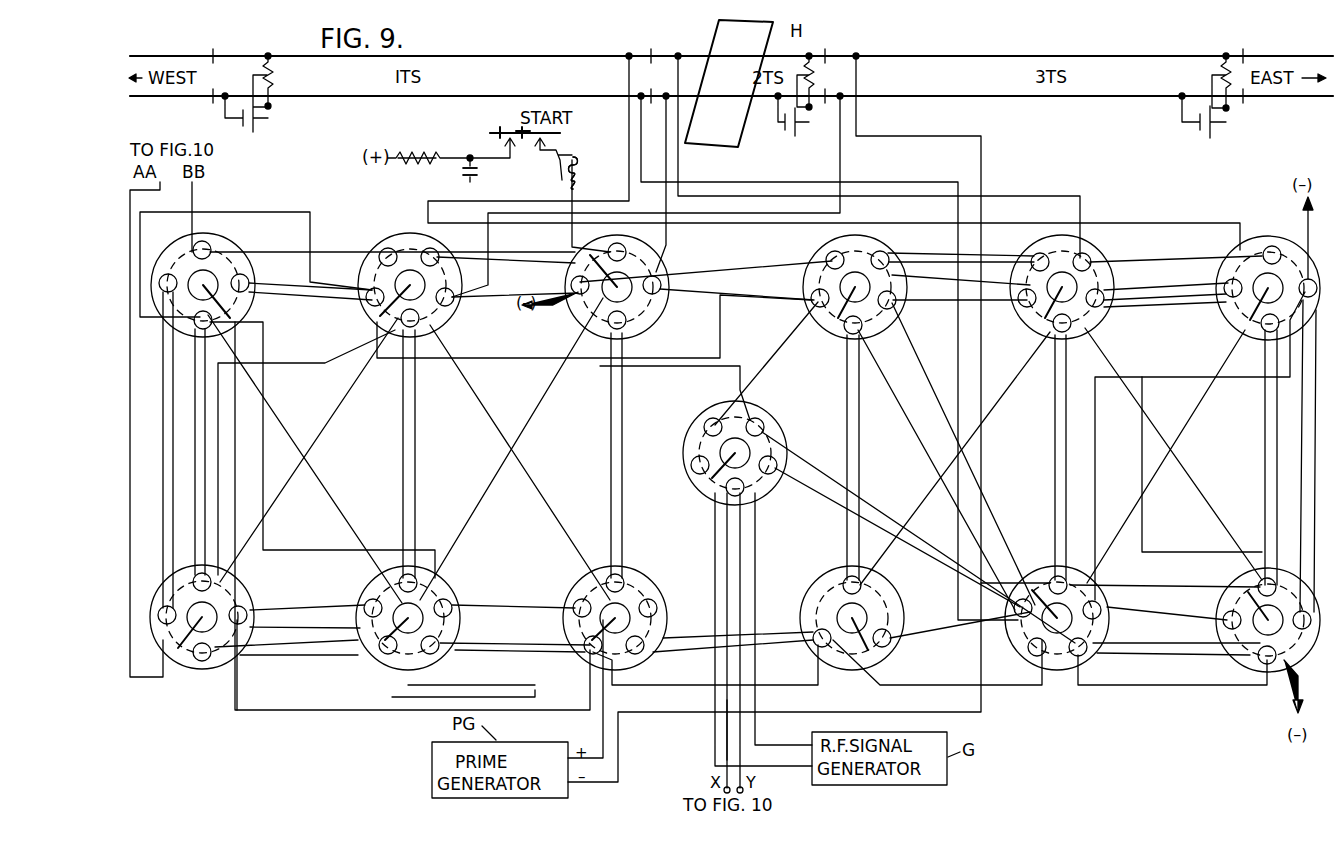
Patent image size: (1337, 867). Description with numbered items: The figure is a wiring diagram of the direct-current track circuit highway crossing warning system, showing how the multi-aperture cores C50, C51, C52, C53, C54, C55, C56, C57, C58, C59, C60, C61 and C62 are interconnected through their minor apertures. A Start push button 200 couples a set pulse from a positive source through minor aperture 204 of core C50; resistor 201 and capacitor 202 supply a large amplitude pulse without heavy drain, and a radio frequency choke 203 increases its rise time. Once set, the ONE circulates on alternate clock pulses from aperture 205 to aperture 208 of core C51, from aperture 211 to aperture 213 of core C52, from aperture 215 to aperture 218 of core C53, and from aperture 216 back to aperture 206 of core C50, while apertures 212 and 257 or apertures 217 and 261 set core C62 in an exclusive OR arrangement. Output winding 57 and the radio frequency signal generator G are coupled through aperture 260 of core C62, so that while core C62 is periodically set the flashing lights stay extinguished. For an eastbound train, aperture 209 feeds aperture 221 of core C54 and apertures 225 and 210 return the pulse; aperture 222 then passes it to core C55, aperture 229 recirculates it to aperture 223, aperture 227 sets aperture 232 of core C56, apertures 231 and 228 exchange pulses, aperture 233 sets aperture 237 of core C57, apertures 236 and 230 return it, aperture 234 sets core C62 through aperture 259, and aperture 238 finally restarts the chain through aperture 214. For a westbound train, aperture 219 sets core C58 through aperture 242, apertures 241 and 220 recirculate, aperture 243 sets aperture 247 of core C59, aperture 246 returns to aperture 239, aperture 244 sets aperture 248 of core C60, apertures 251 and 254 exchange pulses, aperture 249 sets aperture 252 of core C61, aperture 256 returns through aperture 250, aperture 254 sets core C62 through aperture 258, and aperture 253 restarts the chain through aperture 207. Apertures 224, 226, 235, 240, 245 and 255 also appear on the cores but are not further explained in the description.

The output winding 57 is at (724, 735).
The Start push button 200 is at (556, 132).
The resistor 201 is at (436, 152).
The capacitor 202 is at (478, 172).
The radio frequency choke 203 is at (578, 172).
The minor aperture of core C50 204 is at (627, 250).
The minor aperture of core C50 205 is at (658, 292).
The minor aperture of core C50 206 is at (626, 322).
The minor aperture of core C50 207 is at (574, 294).
The minor aperture of core C51 208 is at (826, 258).
The minor aperture of core C51 209 is at (889, 256).
The minor aperture of core C51 210 is at (893, 306).
The minor aperture of core C51 211 is at (856, 334).
The minor aperture of core C51 212 is at (811, 300).
The minor aperture of core C52 213 is at (846, 578).
The minor aperture of core C52 214 is at (886, 648).
The minor aperture of core C52 215 is at (815, 647).
The minor aperture of core C53 216 is at (610, 574).
The minor aperture of core C53 217 is at (657, 607).
The minor aperture of core C53 218 is at (640, 653).
The minor aperture of core C53 219 is at (587, 652).
The minor aperture of core C53 220 is at (573, 604).
The minor aperture of core C54 221 is at (1032, 255).
The minor aperture of core C54 222 is at (1090, 256).
The minor aperture of core C54 223 is at (1100, 306).
The contact of stepping switch C54 224 is at (1056, 332).
The minor aperture of core C54 225 is at (1021, 306).
The contact of stepping switch C55 226 is at (1273, 246).
The minor aperture of core C55 227 is at (1306, 280).
The minor aperture of core C55 228 is at (1262, 325).
The minor aperture of core C55 229 is at (1224, 283).
The minor aperture of core C56 230 is at (1223, 622).
The minor aperture of core C56 231 is at (1260, 578).
The minor aperture of core C56 232 is at (1306, 630).
The minor aperture of core C56 233 is at (1258, 658).
The minor aperture of core C57 234 is at (1020, 600).
The contact of stepping switch C57 235 is at (1055, 576).
The minor aperture of core C57 236 is at (1098, 618).
The minor aperture of core C57 237 is at (1084, 655).
The minor aperture of core C57 238 is at (1032, 656).
The minor aperture of core C58 239 is at (365, 602).
The contact of stepping switch C58 240 is at (400, 574).
The minor aperture of core C58 241 is at (450, 600).
The minor aperture of core C58 242 is at (433, 654).
The minor aperture of core C58 243 is at (383, 654).
The minor aperture of core C59 244 is at (163, 624).
The contact of stepping switch C59 245 is at (211, 580).
The minor aperture of core C59 246 is at (243, 607).
The minor aperture of core C59 247 is at (202, 662).
The minor aperture of core C60 248 is at (166, 274).
The minor aperture of core C60 249 is at (210, 247).
The minor aperture of core C60 250 is at (249, 280).
The minor aperture of core C60 251 is at (214, 319).
The minor aperture of core C61 252 is at (380, 260).
The minor aperture of core C61 253 is at (439, 258).
The minor aperture of core C61 254 is at (453, 302).
The contact of stepping switch C61 255 is at (412, 328).
The minor aperture of core C61 256 is at (367, 301).
The minor aperture of core C62 257 is at (704, 426).
The minor aperture of core C62 258 is at (762, 421).
The minor aperture of core C62 259 is at (777, 464).
The minor aperture of core C62 260 is at (726, 485).
The minor aperture of core C62 261 is at (691, 466).
The multi-aperture core C50 is at (660, 268).
The multi-aperture core C51 is at (830, 245).
The multi-aperture core C52 is at (897, 602).
The multi-aperture core C53 is at (575, 585).
The multi-aperture core C54 is at (1056, 236).
The multi-aperture core C55 is at (1254, 238).
The multi-aperture core C56 is at (1230, 582).
The multi-aperture core C57 is at (1072, 670).
The multi-aperture core C58 is at (368, 580).
The multi-aperture core C59 is at (190, 660).
The multi-aperture core C60 is at (256, 300).
The multi-aperture core C61 is at (388, 243).
The multi-aperture core C62 is at (745, 408).